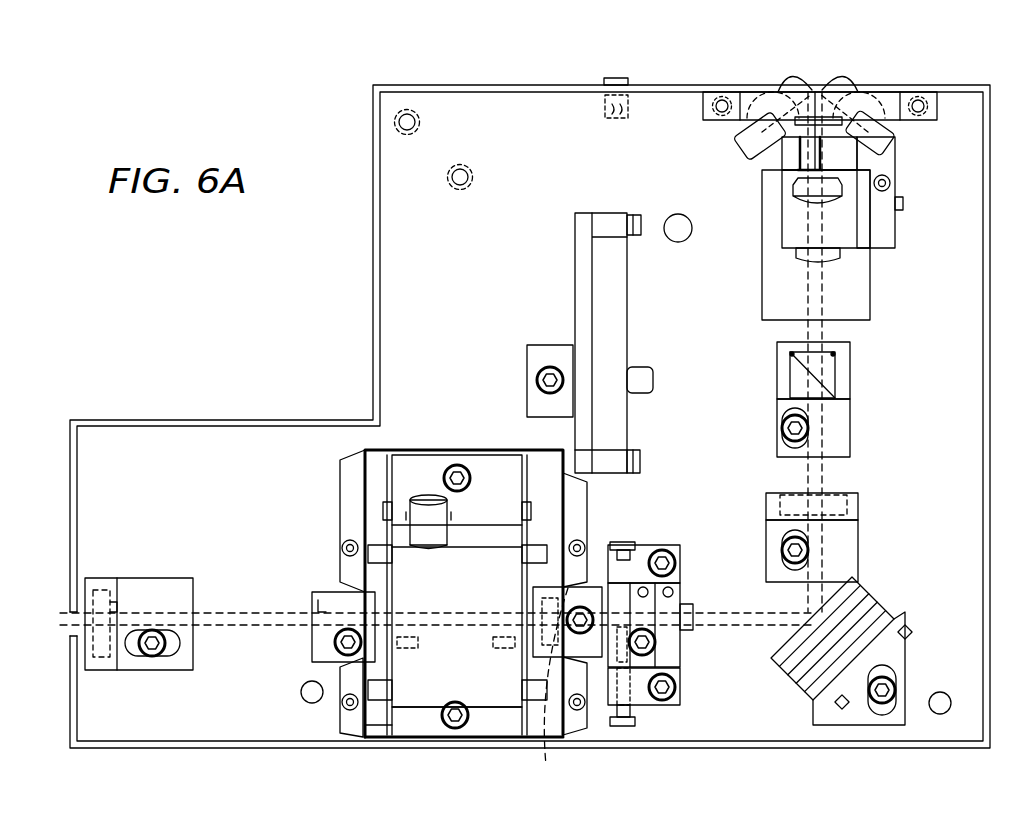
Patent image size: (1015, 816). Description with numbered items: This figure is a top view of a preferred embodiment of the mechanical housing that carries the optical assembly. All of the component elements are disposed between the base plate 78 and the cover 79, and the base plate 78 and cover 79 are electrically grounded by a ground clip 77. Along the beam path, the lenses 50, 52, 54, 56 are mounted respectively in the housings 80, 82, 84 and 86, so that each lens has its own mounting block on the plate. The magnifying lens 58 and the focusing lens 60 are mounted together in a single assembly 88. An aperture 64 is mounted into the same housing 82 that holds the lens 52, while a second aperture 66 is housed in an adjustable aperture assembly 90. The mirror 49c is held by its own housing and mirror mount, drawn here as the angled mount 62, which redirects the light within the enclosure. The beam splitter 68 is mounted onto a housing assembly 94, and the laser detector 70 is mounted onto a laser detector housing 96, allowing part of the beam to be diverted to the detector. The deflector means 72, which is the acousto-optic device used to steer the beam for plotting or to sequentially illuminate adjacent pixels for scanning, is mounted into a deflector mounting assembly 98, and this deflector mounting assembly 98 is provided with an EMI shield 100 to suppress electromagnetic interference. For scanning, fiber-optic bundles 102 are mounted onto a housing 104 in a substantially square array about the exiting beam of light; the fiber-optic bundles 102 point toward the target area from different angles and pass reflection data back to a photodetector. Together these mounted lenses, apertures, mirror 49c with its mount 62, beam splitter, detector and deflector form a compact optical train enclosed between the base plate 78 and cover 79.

The mirror 49c is at (774, 662).
The lens 50 is at (102, 670).
The lens 52 is at (372, 737).
The lens 54 is at (552, 694).
The lens 56 is at (852, 510).
The magnifying lens 58 is at (798, 250).
The focusing lens 60 is at (796, 180).
The mirror mount 62 is at (907, 655).
The aperture 64 is at (312, 640).
The aperture 66 is at (655, 597).
The beam splitter 68 is at (837, 378).
The laser detector 70 is at (627, 212).
The deflector means 72 is at (420, 740).
The ground clip 77 is at (606, 80).
The base plate 78 is at (427, 258).
The cover 79 is at (373, 316).
The housing 80 is at (170, 670).
The housing 82 is at (338, 715).
The housing 84 is at (588, 735).
The housing 86 is at (858, 553).
The assembly 88 is at (895, 242).
The adjustable aperture assembly 90 is at (660, 705).
The housing assembly 94 is at (850, 431).
The laser detector housing 96 is at (573, 436).
The deflector mounting assembly 98 is at (497, 740).
The EMI shield 100 is at (340, 507).
The fiber-optic bundles 102 is at (845, 72).
The housing 104 is at (750, 105).